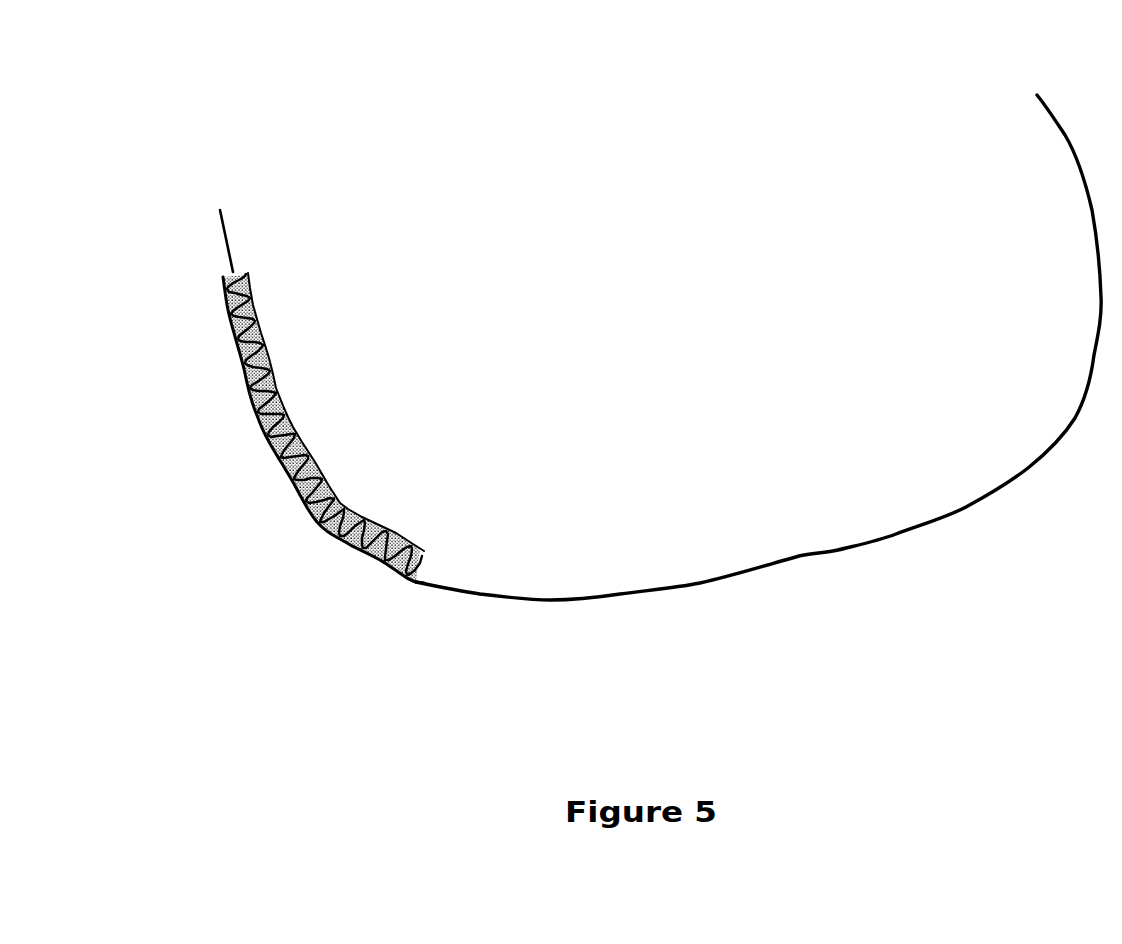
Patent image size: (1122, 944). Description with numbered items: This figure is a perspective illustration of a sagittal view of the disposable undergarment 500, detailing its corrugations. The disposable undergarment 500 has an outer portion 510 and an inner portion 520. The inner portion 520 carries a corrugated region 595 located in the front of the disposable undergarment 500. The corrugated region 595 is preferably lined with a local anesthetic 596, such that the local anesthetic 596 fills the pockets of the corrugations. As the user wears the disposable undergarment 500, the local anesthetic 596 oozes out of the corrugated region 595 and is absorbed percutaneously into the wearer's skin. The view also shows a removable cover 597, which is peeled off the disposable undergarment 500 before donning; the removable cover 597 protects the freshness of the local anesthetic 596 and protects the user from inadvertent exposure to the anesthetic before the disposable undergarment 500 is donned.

The disposable undergarment 500 is at (403, 103).
The outer portion 510 is at (317, 524).
The inner portion 520 is at (803, 557).
The corrugated region 595 is at (360, 557).
The local anesthetic 596 is at (415, 581).
The removable cover 597 is at (298, 427).